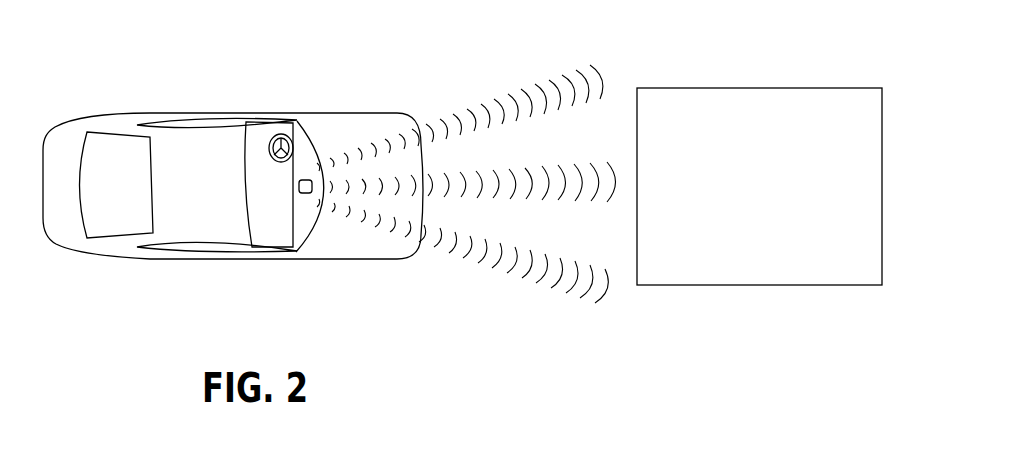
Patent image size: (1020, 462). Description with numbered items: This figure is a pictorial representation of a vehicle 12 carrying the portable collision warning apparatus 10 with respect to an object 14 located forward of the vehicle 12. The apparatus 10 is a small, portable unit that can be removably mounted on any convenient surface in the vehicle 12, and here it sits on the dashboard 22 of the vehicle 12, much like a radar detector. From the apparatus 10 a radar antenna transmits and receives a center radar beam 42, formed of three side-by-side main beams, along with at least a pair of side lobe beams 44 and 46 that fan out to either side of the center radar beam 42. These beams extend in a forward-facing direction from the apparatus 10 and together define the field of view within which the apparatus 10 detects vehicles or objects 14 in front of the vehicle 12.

The portable collision warning apparatus 10 is at (304, 199).
The vehicle 12 is at (342, 109).
The object 14 is at (732, 105).
The dashboard 22 is at (262, 235).
The center radar beam 42 is at (543, 167).
The side lobe beam 44 is at (555, 73).
The side lobe beam 46 is at (508, 277).